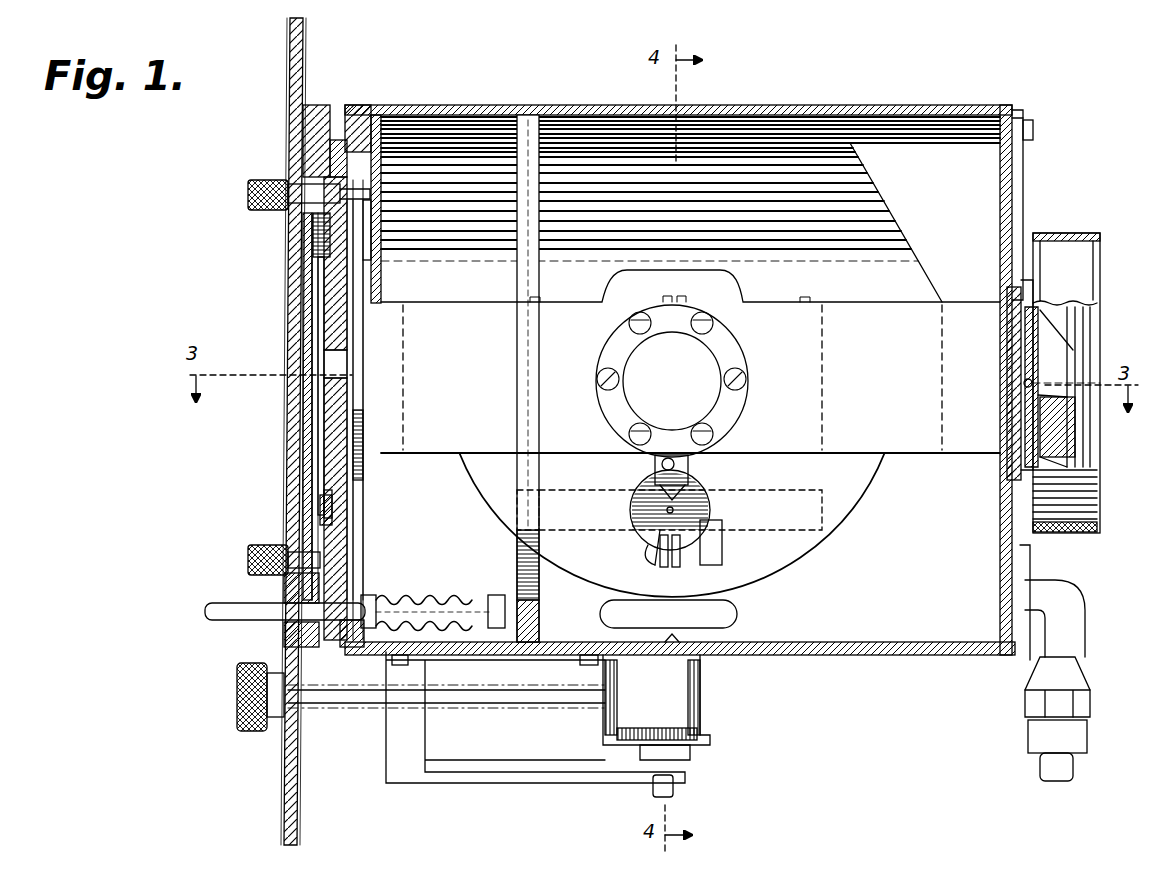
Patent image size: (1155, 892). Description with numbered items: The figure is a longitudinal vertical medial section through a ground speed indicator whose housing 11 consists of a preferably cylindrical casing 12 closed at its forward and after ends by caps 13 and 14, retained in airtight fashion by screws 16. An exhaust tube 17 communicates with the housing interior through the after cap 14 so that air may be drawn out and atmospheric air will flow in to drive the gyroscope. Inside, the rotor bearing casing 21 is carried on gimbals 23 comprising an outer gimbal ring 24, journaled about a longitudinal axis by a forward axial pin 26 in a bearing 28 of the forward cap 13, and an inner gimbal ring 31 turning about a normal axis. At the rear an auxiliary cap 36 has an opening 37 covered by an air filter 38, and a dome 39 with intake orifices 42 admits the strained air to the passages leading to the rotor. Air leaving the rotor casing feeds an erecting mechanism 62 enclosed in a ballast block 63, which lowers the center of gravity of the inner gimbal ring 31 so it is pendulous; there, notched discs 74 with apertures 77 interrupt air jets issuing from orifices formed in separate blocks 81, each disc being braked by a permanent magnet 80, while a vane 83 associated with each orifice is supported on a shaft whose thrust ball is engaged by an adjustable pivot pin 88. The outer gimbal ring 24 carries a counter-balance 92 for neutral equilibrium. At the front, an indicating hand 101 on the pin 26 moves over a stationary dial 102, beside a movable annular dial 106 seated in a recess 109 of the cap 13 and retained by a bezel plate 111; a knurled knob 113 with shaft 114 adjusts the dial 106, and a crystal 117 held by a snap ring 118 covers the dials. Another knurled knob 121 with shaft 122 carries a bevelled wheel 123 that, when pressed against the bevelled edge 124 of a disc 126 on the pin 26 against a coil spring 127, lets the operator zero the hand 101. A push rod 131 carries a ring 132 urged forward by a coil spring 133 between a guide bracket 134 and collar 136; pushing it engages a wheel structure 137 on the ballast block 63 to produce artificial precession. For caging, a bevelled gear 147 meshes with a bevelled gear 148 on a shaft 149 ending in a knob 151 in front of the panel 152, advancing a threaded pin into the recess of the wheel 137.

The housing 11 is at (958, 656).
The casing 12 is at (918, 95).
The forward cap 13 is at (343, 143).
The after cap 14 is at (1015, 172).
The screws 16 is at (1030, 130).
The exhaust tube 17 is at (1066, 620).
The rotor bearing casing 21 is at (736, 301).
The gimbals 23 is at (828, 318).
The outer gimbal ring 24 is at (886, 318).
The forward axial pin 26 is at (348, 385).
The bearing 28 is at (322, 402).
The inner gimbal ring 31 is at (832, 394).
The auxiliary cap 36 is at (1076, 484).
The opening 37 is at (1078, 316).
The air filter 38 is at (1090, 348).
The dome 39 is at (1090, 442).
The intake orifices 42 is at (1006, 362).
The erecting mechanism 62 is at (712, 494).
The ballast block 63 is at (845, 488).
The discs 74 is at (706, 511).
The apertures 77 is at (655, 536).
The permanent magnet 80 is at (568, 503).
The blocks 81 is at (664, 558).
The vane 83 is at (705, 550).
The adjustable pivot pin 88 is at (655, 468).
The counter-balance 92 is at (978, 222).
The indicating hand 101 is at (304, 342).
The stationary dial 102 is at (320, 308).
The movable dial 106 is at (314, 238).
The recess 109 is at (324, 503).
The bezel plate 111 is at (292, 637).
The knurled knob 113 is at (246, 562).
The shaft 114 is at (288, 576).
The crystal 117 is at (299, 432).
The snap ring 118 is at (299, 457).
The knurled knob 121 is at (246, 192).
The shaft 122 is at (290, 213).
The bevelled wheel 123 is at (342, 168).
The bevelled edge 124 is at (318, 270).
The disc 126 is at (349, 265).
The coil spring 127 is at (382, 213).
The push rod 131 is at (206, 617).
The ring 132 is at (531, 126).
The coil spring 133 is at (422, 598).
The guide bracket 134 is at (494, 598).
The collar 136 is at (369, 596).
The wheel structure 137 is at (740, 612).
The bevelled gear 147 is at (702, 735).
The bevelled gear 148 is at (612, 722).
The shaft 149 is at (495, 680).
The knob 151 is at (240, 724).
The panel 152 is at (290, 787).